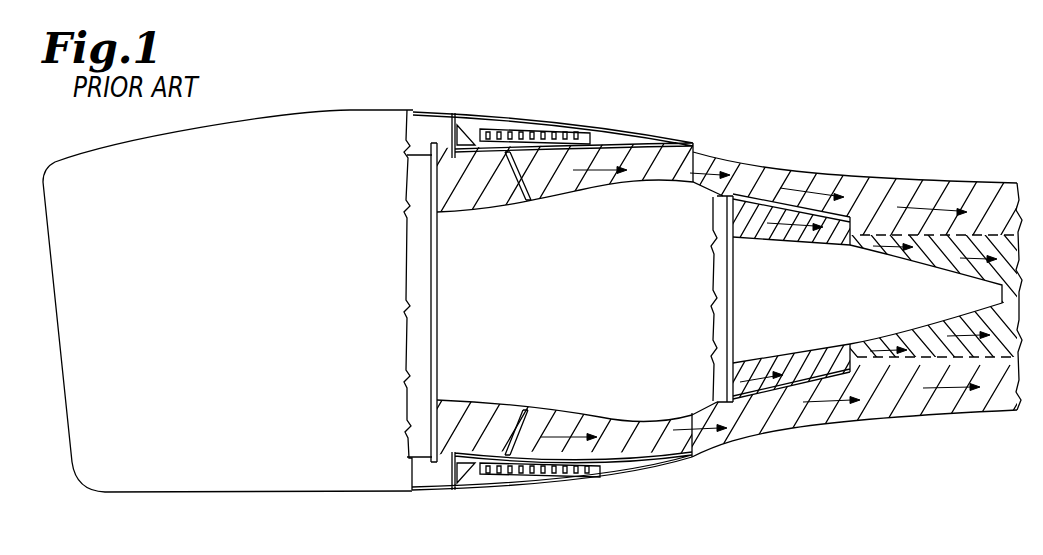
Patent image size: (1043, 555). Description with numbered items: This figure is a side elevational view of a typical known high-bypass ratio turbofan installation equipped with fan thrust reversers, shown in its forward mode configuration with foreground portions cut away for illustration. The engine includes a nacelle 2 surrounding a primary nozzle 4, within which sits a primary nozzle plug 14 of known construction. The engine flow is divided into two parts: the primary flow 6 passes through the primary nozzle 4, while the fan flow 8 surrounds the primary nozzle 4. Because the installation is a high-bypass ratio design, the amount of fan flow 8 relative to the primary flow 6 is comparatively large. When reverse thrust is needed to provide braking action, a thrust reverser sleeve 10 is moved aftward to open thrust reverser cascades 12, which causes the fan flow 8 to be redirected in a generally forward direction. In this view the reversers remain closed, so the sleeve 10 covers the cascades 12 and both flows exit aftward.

The nacelle 2 is at (257, 120).
The primary nozzle 4 is at (758, 194).
The primary flow 6 is at (795, 228).
The fan flow 8 is at (672, 437).
The thrust reverser sleeve 10 is at (518, 486).
The thrust reverser cascades 12 is at (538, 128).
The primary nozzle plug 14 is at (808, 309).